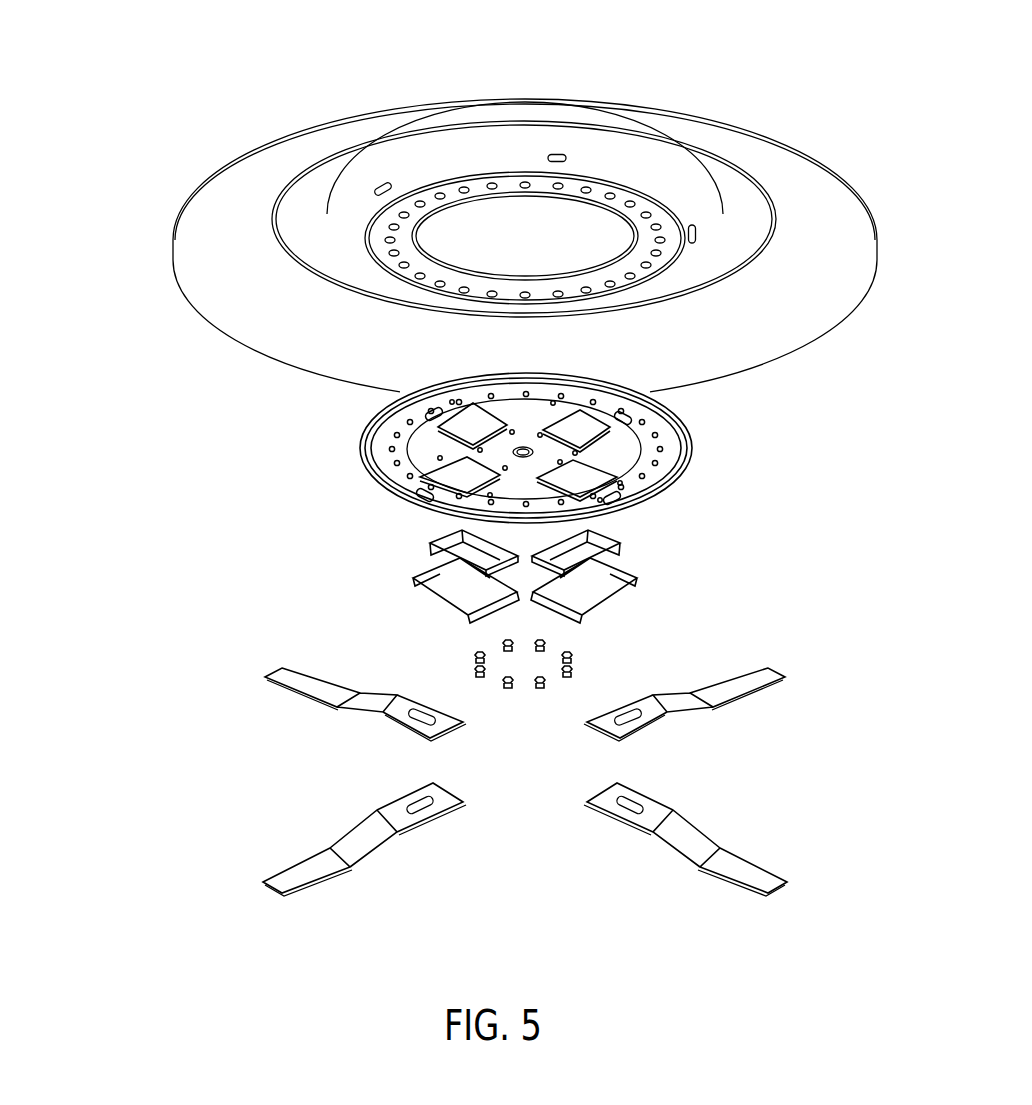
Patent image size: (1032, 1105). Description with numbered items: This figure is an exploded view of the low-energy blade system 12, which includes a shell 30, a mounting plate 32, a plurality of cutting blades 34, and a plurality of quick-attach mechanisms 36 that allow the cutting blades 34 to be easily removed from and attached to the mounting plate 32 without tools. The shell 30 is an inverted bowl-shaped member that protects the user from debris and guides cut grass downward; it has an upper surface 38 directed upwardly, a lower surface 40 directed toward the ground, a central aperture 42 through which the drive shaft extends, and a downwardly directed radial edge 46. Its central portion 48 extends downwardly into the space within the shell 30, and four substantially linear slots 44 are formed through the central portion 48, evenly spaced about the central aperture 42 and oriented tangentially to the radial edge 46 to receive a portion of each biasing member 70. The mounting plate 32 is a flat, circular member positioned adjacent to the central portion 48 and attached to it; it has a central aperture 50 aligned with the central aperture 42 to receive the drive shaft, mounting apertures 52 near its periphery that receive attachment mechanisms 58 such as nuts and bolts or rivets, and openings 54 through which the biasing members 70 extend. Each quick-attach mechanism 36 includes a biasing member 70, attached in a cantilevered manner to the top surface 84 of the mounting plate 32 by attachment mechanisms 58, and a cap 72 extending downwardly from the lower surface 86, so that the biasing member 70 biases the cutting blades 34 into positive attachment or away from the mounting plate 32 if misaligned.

The low-energy blade system 12 is at (122, 364).
The shell 30 is at (257, 326).
The mounting plate 32 is at (694, 455).
The cutting blades 34 is at (770, 673).
The quick-attach mechanisms 36 is at (387, 532).
The upper surface 38 is at (318, 125).
The lower surface 40 is at (222, 197).
The central aperture 42 is at (490, 218).
The slots 44 is at (376, 184).
The radial edge 46 is at (858, 312).
The central portion 48 is at (345, 217).
The central aperture 50 is at (519, 447).
The mounting apertures 52 is at (372, 458).
The openings 54 is at (455, 468).
The attachment mechanism 58 is at (478, 676).
The biasing member 70 is at (432, 584).
The cap 72 is at (416, 495).
The top surface 84 is at (362, 430).
The lower surface 86 is at (665, 482).